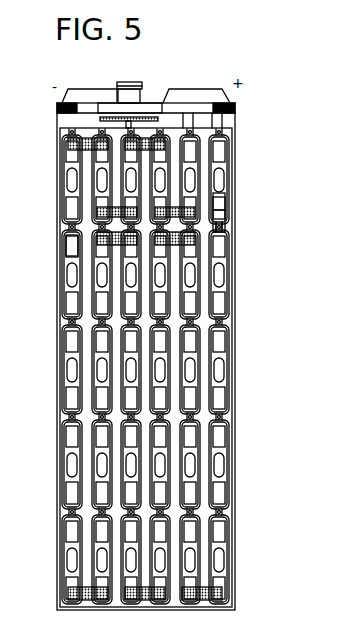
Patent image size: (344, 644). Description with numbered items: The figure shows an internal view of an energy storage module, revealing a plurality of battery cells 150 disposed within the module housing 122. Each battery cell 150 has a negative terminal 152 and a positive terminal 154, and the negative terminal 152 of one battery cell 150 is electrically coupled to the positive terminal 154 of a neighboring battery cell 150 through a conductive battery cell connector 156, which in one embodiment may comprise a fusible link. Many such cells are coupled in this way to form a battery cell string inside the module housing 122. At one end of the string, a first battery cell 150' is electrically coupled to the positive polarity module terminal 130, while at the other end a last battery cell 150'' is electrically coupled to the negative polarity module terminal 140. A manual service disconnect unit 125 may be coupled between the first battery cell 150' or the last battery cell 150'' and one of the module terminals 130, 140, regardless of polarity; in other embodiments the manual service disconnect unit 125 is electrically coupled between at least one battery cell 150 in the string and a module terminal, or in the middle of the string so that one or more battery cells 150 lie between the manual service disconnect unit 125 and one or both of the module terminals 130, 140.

The module housing 122 is at (236, 349).
The manual service disconnect unit 125 is at (131, 82).
The positive polarity module terminal 130 is at (233, 104).
The negative polarity module terminal 140 is at (58, 104).
The battery cell 150 is at (250, 271).
The first battery cell 150' is at (249, 176).
The last battery cell 150'' is at (237, 170).
The negative terminal 152 is at (217, 200).
The positive terminal 154 is at (224, 226).
The battery cell connector 156 is at (217, 217).